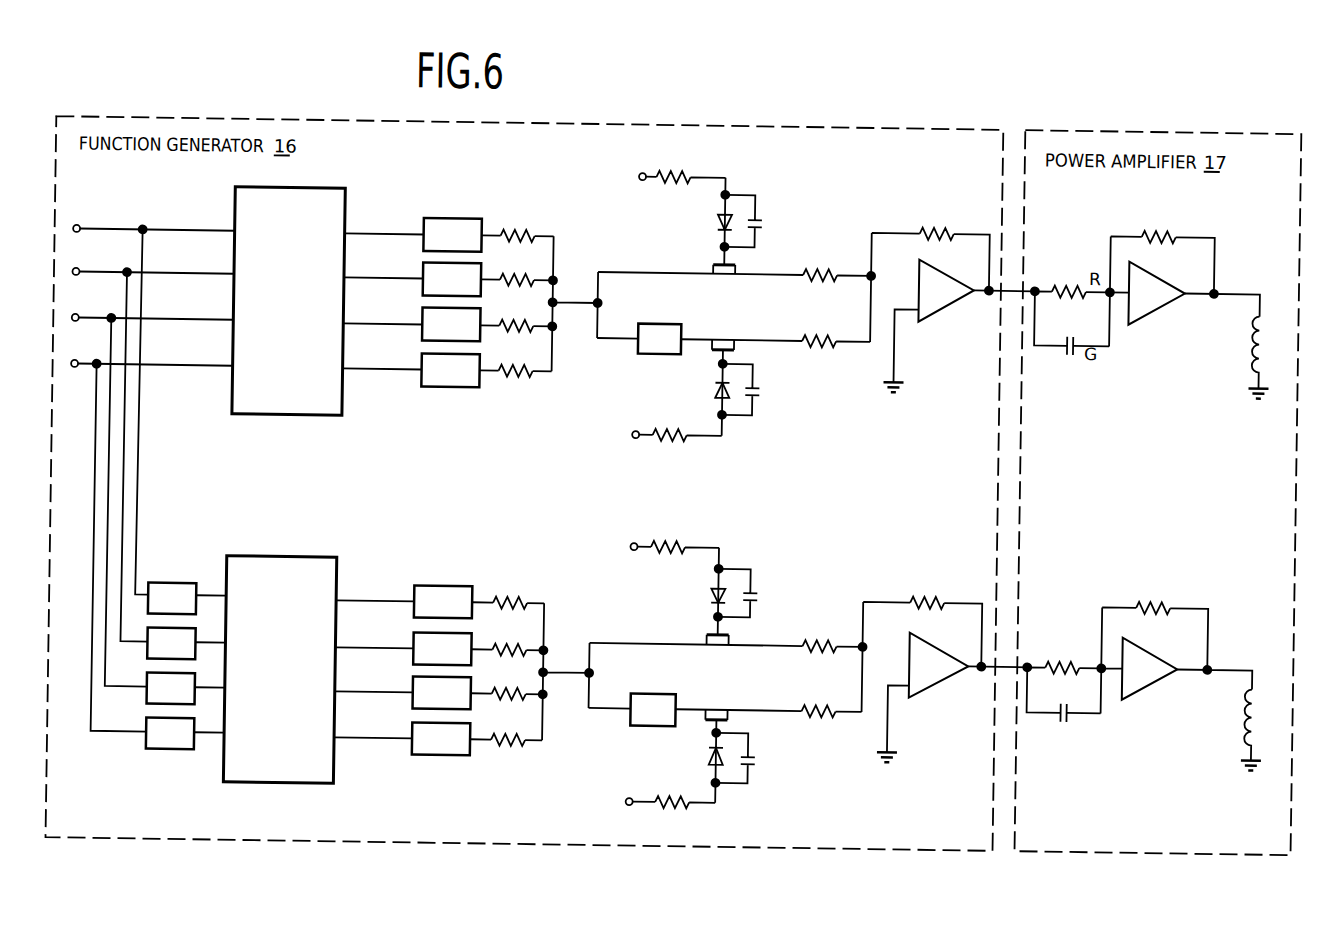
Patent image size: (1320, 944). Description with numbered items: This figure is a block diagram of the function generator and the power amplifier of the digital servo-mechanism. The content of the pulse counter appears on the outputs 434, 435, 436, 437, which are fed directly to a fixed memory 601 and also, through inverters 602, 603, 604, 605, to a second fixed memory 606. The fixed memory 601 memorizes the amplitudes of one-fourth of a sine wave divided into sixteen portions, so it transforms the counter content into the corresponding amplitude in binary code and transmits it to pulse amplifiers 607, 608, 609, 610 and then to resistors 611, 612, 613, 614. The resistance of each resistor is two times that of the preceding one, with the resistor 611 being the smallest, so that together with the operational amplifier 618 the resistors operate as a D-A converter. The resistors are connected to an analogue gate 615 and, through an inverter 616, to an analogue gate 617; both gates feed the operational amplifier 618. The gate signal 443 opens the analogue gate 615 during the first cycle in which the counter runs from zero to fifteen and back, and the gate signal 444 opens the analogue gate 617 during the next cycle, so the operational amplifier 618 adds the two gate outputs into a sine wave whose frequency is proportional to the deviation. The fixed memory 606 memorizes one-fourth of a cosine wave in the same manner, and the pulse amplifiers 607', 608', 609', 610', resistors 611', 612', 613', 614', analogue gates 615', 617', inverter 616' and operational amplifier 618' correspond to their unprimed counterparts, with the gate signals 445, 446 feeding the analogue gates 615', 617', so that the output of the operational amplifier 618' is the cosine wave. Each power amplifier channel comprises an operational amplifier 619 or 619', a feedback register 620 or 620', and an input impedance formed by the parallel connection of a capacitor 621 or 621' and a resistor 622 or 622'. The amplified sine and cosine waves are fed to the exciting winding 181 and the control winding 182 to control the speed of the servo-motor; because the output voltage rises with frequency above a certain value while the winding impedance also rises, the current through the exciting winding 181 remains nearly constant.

The pulse counter output 434 is at (74, 236).
The pulse counter output 435 is at (74, 279).
The pulse counter output 436 is at (74, 325).
The pulse counter output 437 is at (73, 370).
The gate signal 443 is at (638, 173).
The gate signal 444 is at (640, 420).
The gate signal 445 is at (636, 543).
The gate signal 446 is at (630, 804).
The fixed memory 601 is at (332, 193).
The inverter 602 is at (203, 580).
The inverter 603 is at (149, 660).
The inverter 604 is at (149, 705).
The inverter 605 is at (149, 748).
The fixed memory 606 is at (337, 562).
The pulse amplifier 607 is at (428, 228).
The pulse amplifier 608 is at (428, 274).
The pulse amplifier 609 is at (427, 318).
The pulse amplifier 610 is at (426, 364).
The resistor 611 is at (546, 227).
The resistor 612 is at (546, 272).
The resistor 613 is at (545, 333).
The resistor 614 is at (544, 374).
The analogue gate 615 is at (703, 225).
The inverter 616 is at (652, 325).
The analogue gate 617 is at (744, 373).
The operational amplifier 618 is at (959, 326).
The operational amplifier 619 is at (1159, 300).
The feedback register 620 is at (1173, 222).
The capacitor 621 is at (1057, 360).
The resistor 622 is at (1063, 276).
The pulse amplifier 607' is at (421, 595).
The pulse amplifier 608' is at (420, 642).
The pulse amplifier 609' is at (420, 686).
The pulse amplifier 610' is at (419, 732).
The resistor 611' is at (529, 588).
The resistor 612' is at (540, 637).
The resistor 613' is at (539, 703).
The resistor 614' is at (521, 755).
The analogue gate 615' is at (694, 596).
The inverter 616' is at (678, 699).
The analogue gate 617' is at (740, 740).
The operational amplifier 618' is at (952, 698).
The operational amplifier 619' is at (1156, 676).
The feedback register 620' is at (1167, 593).
The capacitor 621' is at (1090, 727).
The resistor 622' is at (1062, 651).
The exciting winding 181 is at (1250, 349).
The control winding 182 is at (1248, 726).